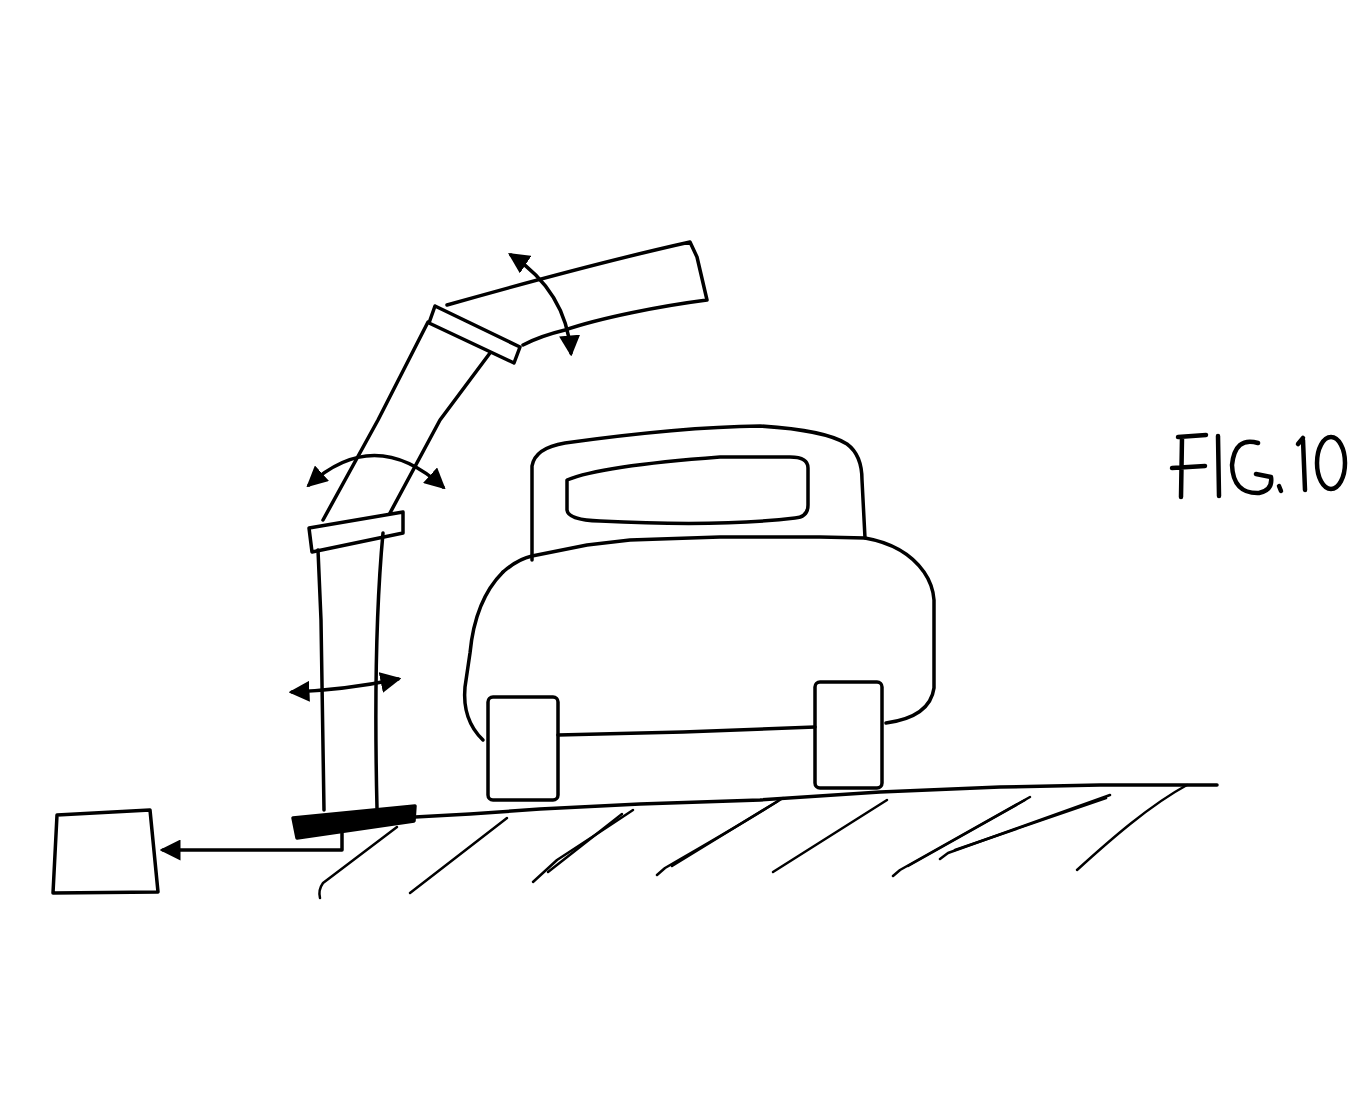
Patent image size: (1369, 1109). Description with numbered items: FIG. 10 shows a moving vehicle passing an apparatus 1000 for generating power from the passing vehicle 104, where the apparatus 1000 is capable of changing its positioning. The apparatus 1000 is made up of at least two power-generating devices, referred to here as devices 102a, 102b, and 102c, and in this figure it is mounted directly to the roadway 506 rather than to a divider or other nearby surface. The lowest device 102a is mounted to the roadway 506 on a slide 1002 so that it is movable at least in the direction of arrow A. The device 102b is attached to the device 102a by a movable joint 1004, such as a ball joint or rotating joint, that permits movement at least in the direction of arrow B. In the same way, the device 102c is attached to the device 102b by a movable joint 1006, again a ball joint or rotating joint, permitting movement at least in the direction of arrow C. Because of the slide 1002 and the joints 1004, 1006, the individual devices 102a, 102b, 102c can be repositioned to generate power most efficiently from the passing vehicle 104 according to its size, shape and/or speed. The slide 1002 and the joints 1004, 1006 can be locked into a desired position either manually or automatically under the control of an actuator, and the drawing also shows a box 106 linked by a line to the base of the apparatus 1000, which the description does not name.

The apparatus 1000 is at (285, 398).
The slide 1002 is at (315, 816).
The movable joint 1004 is at (305, 523).
The movable joint 1006 is at (446, 303).
The device 102a is at (314, 598).
The device 102b is at (397, 362).
The device 102c is at (573, 257).
The passing vehicle 104 is at (862, 501).
The controller 106 is at (197, 851).
The roadway 506 is at (1038, 785).